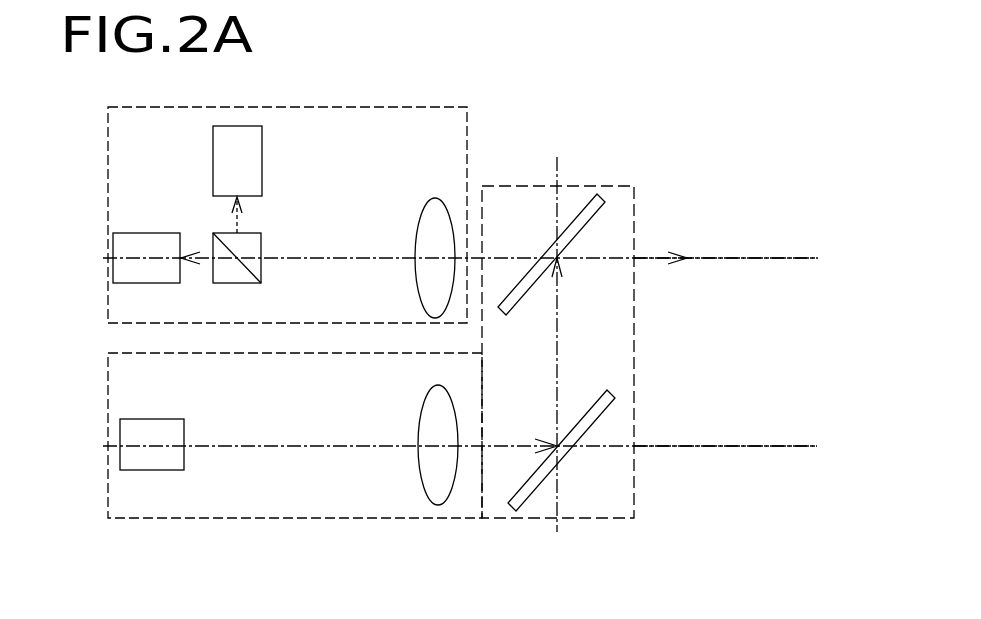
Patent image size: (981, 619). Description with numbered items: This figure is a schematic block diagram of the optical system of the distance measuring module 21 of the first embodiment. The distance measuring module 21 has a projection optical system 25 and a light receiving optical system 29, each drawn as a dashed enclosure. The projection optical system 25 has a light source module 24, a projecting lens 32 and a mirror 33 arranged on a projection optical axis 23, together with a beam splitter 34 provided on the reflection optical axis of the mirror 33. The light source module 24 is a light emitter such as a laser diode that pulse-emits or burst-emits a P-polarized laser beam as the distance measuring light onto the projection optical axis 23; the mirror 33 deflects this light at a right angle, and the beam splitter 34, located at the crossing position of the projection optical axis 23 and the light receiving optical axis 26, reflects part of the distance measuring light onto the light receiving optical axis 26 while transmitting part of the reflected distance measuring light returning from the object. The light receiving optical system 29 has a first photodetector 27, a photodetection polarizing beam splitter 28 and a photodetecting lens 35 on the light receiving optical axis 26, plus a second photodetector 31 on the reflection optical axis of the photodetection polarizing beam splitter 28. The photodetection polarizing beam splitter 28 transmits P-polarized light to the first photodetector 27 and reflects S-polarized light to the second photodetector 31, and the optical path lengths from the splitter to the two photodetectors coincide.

The distance measuring module 21 is at (694, 125).
The projection optical axis 23 is at (732, 446).
The light source module 24 is at (185, 460).
The projection optical system 25 is at (350, 520).
The light receiving optical axis 26 is at (748, 258).
The first photodetector 27 is at (166, 233).
The photodetection polarizing beam splitter 28 is at (262, 235).
The light receiving optical system 29 is at (468, 143).
The second photodetector 31 is at (212, 153).
The projecting lens 32 is at (418, 407).
The mirror 33 is at (585, 410).
The beam splitter 34 is at (521, 303).
The photodetecting lens 35 is at (413, 238).